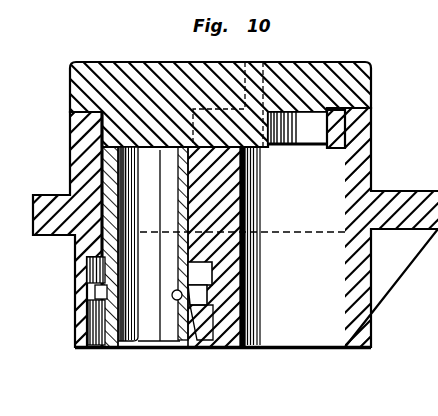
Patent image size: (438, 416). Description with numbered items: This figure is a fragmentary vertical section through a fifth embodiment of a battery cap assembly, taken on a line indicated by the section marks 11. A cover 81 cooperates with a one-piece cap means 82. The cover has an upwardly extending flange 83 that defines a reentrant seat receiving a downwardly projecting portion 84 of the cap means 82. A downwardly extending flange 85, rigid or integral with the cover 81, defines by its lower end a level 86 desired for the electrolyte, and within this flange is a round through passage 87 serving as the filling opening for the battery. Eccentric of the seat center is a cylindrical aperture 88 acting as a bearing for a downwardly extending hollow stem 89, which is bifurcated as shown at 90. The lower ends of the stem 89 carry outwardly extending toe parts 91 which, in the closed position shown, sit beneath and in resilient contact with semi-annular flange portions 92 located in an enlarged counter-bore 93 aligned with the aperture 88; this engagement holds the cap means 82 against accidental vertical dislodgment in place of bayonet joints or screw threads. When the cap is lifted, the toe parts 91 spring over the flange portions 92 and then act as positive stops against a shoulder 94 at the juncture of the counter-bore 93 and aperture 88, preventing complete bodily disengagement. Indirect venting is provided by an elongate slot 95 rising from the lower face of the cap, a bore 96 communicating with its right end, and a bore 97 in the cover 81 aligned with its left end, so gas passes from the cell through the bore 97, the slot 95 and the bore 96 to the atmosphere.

The cap means 82 is at (116, 60).
The bore 96 is at (286, 55).
The downwardly projecting portion 84 is at (338, 148).
The upwardly extending flange 83 is at (358, 177).
The cover 81 is at (424, 232).
The downwardly extending flange 85 is at (357, 330).
The through passage 87 is at (346, 347).
The aperture 88 is at (76, 250).
The level 86 is at (78, 351).
The hollow stem 89 is at (78, 183).
The bifurcation 90 is at (131, 346).
The bore 97 is at (262, 208).
The elongate slot 95 is at (257, 157).
The shoulder 94 is at (213, 265).
The enlarged part or counter-bore 93 is at (207, 308).
The semi-annular flange portions 92 is at (87, 300).
The toe parts 91 is at (92, 327).
The section line 11 is at (50, 103).